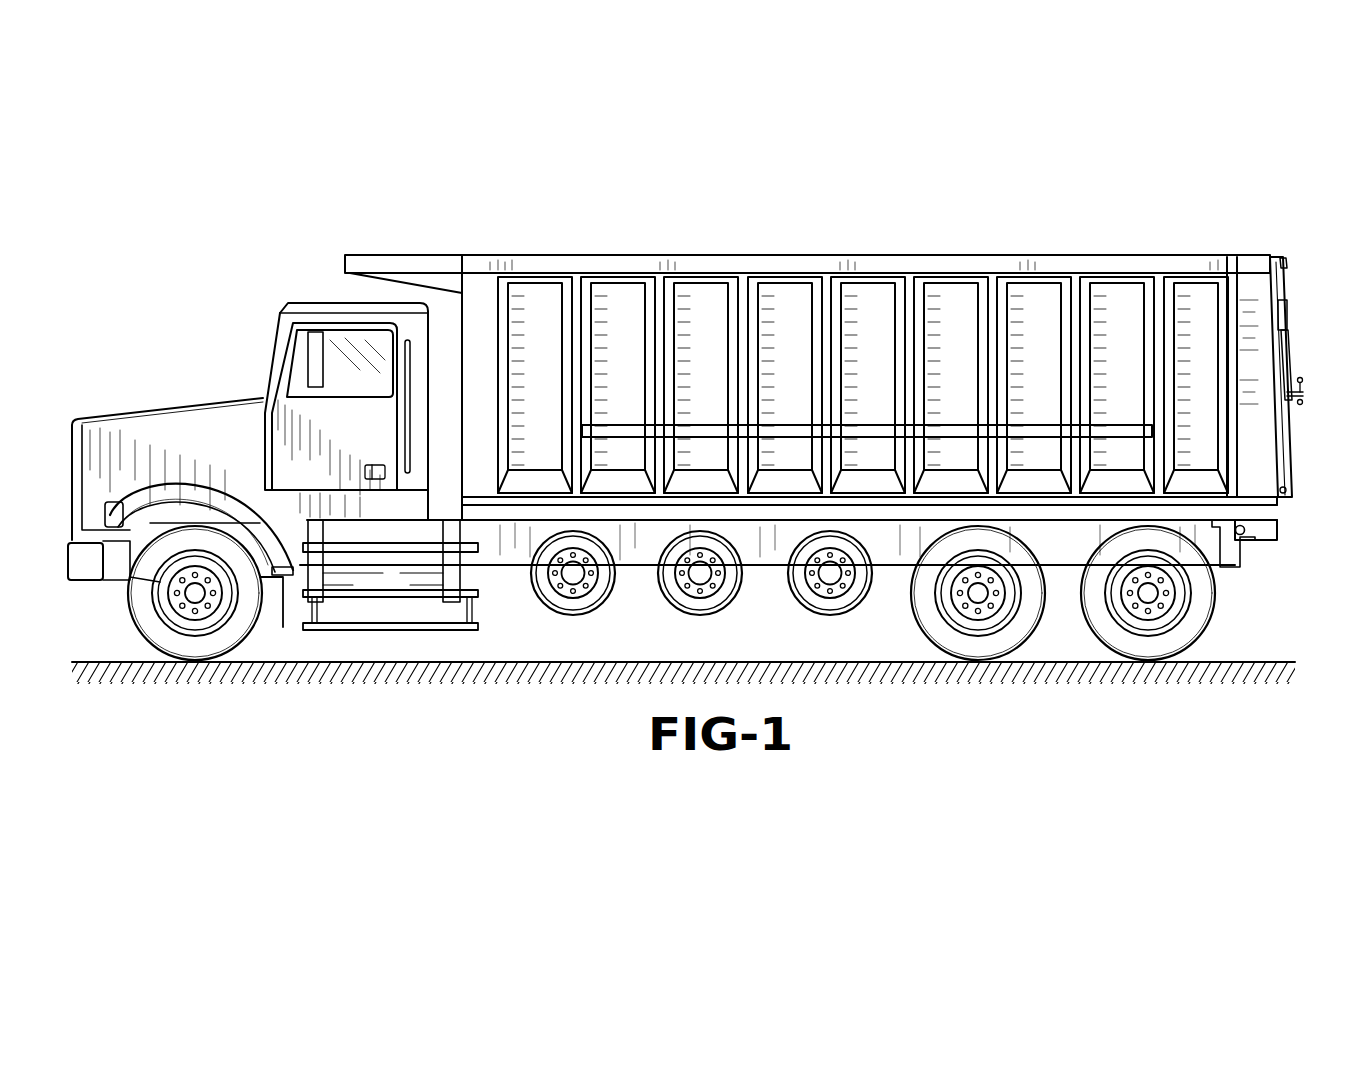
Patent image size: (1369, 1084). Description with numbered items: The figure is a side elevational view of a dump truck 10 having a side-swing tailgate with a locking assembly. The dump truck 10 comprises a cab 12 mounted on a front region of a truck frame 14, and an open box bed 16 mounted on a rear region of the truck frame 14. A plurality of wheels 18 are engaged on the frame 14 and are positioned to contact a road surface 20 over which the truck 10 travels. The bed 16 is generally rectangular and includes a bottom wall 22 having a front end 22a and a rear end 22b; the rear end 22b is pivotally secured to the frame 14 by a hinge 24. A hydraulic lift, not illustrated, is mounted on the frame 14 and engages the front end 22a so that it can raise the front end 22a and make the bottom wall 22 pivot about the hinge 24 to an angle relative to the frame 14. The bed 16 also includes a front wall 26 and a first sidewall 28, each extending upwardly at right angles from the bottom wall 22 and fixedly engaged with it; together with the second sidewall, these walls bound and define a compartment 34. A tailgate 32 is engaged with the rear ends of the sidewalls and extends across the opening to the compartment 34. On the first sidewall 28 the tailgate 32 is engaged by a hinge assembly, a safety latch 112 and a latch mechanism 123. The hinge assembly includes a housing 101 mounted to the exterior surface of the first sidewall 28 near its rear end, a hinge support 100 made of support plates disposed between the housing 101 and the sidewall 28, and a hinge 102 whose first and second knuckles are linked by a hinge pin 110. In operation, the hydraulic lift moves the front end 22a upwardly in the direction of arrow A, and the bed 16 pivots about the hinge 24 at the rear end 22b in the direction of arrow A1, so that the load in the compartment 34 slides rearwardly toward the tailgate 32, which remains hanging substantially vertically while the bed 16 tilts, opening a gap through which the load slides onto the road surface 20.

The dump truck 10 is at (1104, 160).
The cab 12 is at (276, 358).
The truck frame 14 is at (642, 568).
The open box bed 16 is at (850, 371).
The wheels 18 is at (196, 663).
The road surface 20 is at (806, 662).
The bottom wall 22 is at (876, 575).
The front end of bottom wall 22a is at (484, 506).
The rear end of bottom wall 22b is at (1201, 507).
The hinge 24 is at (1245, 534).
The front wall 26 is at (456, 428).
The first sidewall 28 is at (700, 322).
The tailgate 32 is at (1290, 362).
The compartment 34 is at (885, 250).
The hinge support 100 is at (1253, 373).
The housing 101 is at (1250, 362).
The hinge 102 is at (1292, 262).
The hinge pin 110 is at (1289, 328).
The safety latch 112 is at (1310, 410).
The latch mechanism 123 is at (1293, 505).
The arrow A is at (478, 166).
The arrow A1 is at (1340, 536).